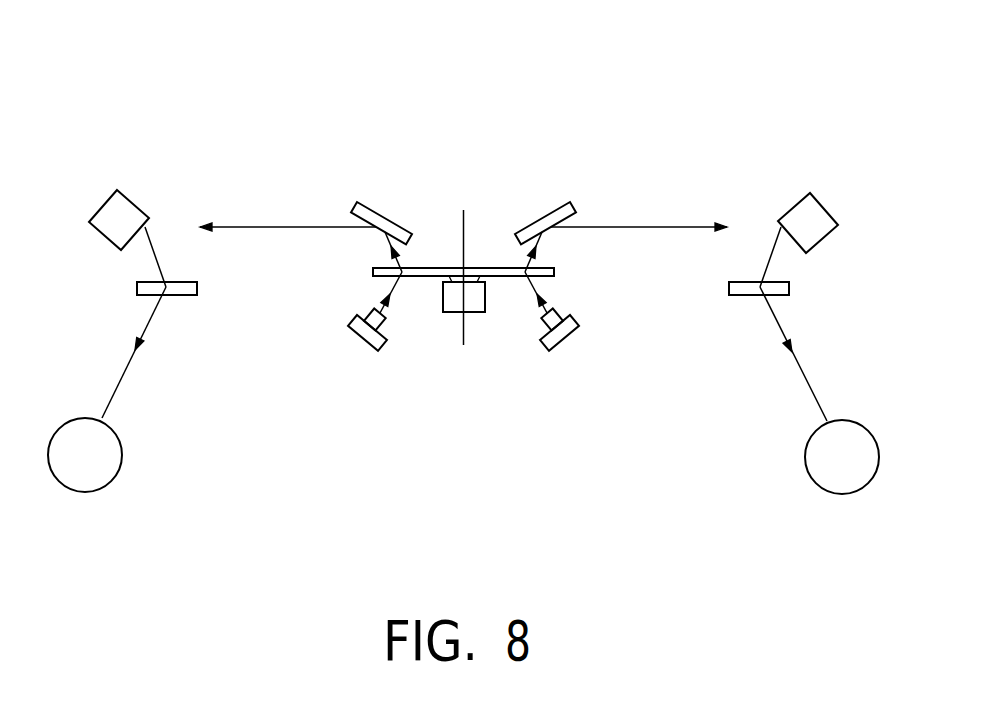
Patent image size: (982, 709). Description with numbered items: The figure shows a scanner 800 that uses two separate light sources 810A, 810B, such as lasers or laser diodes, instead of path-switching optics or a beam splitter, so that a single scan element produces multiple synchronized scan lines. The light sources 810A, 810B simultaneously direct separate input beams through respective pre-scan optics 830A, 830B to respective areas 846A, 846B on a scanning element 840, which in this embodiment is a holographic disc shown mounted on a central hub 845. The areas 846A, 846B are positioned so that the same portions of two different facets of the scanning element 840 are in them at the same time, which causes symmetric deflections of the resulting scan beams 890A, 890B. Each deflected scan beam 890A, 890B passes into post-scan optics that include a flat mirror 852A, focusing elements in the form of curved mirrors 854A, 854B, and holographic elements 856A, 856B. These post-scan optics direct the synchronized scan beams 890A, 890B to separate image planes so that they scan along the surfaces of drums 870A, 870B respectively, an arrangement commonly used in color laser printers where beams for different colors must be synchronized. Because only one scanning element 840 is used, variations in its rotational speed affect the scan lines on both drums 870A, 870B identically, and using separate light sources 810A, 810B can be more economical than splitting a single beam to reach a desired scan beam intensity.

The scanner 800 is at (333, 52).
The light source 810A is at (569, 336).
The light source 810B is at (360, 338).
The pre-scan optics 830A is at (568, 312).
The pre-scan optics 830B is at (362, 313).
The scanning element 840 is at (548, 261).
The spindle hub 845 is at (473, 313).
The area 846A is at (520, 280).
The area 846B is at (405, 280).
The flat mirror 852A is at (385, 206).
The curved mirror 854A is at (828, 208).
The curved mirror 854B is at (98, 207).
The holographic element 856A is at (741, 297).
The holographic element 856B is at (183, 297).
The drum 870A is at (805, 457).
The drum 870B is at (121, 455).
The scan beam 890A is at (654, 226).
The scan beam 890B is at (272, 225).